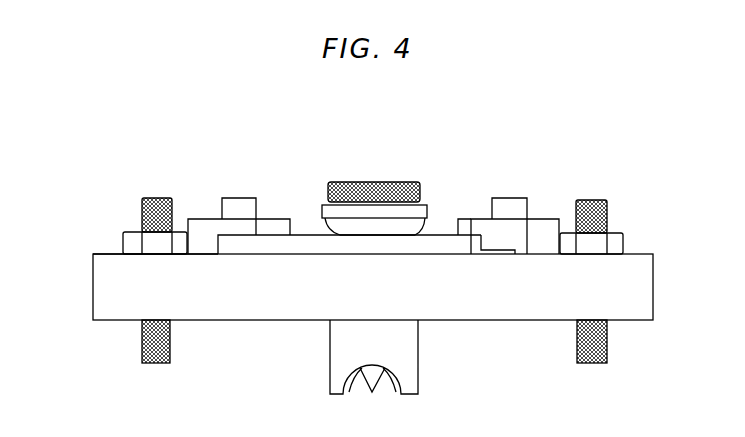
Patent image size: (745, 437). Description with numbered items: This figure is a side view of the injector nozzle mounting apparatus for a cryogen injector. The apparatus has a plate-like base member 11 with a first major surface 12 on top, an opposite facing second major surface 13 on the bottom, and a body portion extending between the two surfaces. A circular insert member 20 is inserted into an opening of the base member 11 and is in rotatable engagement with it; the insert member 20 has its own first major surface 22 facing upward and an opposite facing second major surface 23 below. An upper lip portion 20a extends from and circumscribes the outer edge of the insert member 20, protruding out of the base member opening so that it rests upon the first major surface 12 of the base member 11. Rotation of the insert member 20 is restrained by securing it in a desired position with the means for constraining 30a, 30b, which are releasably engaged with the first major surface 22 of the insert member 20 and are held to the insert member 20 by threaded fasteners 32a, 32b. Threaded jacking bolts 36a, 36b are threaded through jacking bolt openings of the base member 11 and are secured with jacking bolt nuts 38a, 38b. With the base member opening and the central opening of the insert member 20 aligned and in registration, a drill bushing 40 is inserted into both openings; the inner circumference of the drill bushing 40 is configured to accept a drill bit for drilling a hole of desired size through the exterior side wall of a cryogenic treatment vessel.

The base member 11 is at (255, 303).
The first major surface 12 is at (110, 252).
The second major surface 13 is at (475, 322).
The insert member 20 is at (313, 247).
The upper lip portion 20a is at (497, 255).
The first major surface 22 is at (442, 233).
The second major surface 23 is at (463, 253).
The means for constraining 30a is at (210, 218).
The means for constraining 30b is at (540, 219).
The threaded fastener 32a is at (235, 197).
The threaded fastener 32b is at (515, 197).
The threaded jacking bolt 36a is at (142, 342).
The threaded jacking bolt 36b is at (608, 342).
The jacking bolt nut 38a is at (122, 240).
The jacking bolt nut 38b is at (625, 242).
The drill bushing 40 is at (393, 181).